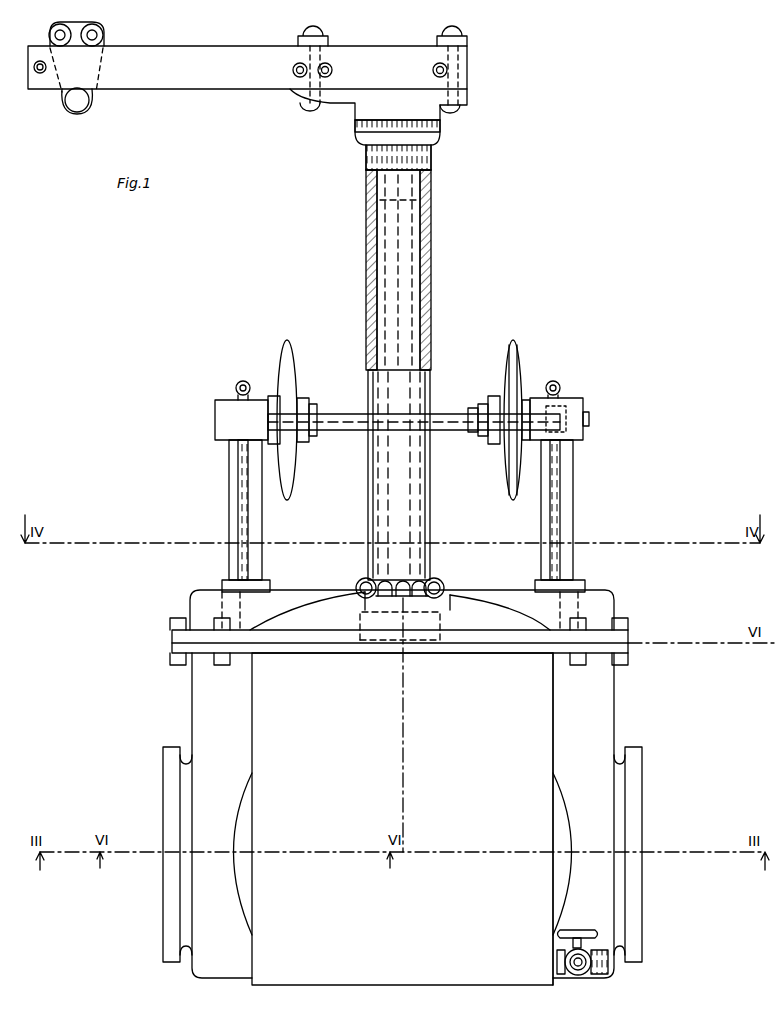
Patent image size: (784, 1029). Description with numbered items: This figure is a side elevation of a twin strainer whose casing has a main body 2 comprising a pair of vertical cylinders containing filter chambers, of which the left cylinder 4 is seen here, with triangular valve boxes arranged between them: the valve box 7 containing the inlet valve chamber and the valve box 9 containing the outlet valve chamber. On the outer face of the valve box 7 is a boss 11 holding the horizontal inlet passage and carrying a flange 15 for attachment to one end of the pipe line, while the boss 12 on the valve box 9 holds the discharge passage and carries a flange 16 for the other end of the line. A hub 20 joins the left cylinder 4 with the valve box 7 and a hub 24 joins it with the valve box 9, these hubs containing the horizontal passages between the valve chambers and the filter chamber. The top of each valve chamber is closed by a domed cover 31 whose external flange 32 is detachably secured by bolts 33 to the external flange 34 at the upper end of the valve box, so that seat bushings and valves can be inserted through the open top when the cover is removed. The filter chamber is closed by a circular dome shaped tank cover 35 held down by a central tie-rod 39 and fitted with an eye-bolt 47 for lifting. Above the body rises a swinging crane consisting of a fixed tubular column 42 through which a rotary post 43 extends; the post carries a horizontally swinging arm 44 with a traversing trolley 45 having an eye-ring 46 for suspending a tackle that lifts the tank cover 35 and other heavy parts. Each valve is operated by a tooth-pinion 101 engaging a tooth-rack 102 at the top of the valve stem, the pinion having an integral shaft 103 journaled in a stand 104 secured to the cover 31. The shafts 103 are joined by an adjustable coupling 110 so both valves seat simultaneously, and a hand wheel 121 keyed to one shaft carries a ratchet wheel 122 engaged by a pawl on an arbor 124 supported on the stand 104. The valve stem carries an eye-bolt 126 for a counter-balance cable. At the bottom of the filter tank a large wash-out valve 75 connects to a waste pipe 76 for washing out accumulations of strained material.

The horizontally swinging arm 44 is at (200, 48).
The traversing trolley 45 is at (100, 31).
The eye-ring 46 is at (78, 98).
The rotary post 43 is at (408, 288).
The fixed tubular column 42 is at (428, 495).
The arbor 124 is at (362, 398).
The adjustable coupling 110 is at (486, 412).
The hand wheel 121 is at (516, 344).
The ratchet wheel 122 is at (528, 400).
The eye-bolt 126 is at (560, 385).
The tooth-pinion 101 is at (560, 412).
The shaft 103 is at (590, 418).
The tooth-rack 102 is at (562, 475).
The stand 104 is at (568, 500).
The domed cover 31 is at (605, 600).
The external flange 32 is at (618, 637).
The external flange 34 is at (620, 650).
The bolts 33 is at (628, 660).
The eye-bolt 47 is at (360, 580).
The tie-rod 39 is at (412, 582).
The tank cover 35 is at (448, 606).
The valve box 9 is at (200, 697).
The cylinder 4 is at (540, 697).
The valve box 7 is at (600, 712).
The main body 2 is at (466, 681).
The flange 16 is at (170, 750).
The boss 12 is at (182, 775).
The flange 15 is at (635, 752).
The boss 11 is at (620, 775).
The hub 24 is at (230, 868).
The hub 20 is at (575, 875).
The wash-out valve 75 is at (590, 945).
The waste pipe 76 is at (605, 958).